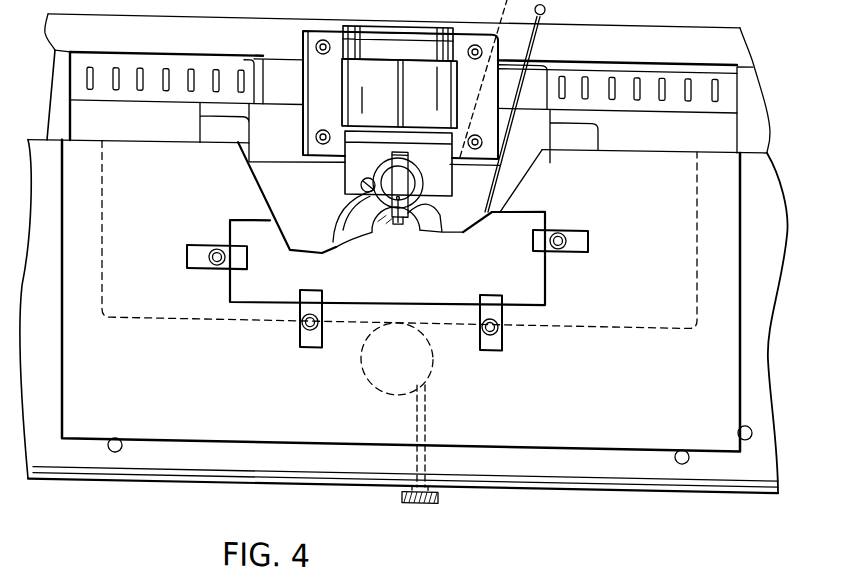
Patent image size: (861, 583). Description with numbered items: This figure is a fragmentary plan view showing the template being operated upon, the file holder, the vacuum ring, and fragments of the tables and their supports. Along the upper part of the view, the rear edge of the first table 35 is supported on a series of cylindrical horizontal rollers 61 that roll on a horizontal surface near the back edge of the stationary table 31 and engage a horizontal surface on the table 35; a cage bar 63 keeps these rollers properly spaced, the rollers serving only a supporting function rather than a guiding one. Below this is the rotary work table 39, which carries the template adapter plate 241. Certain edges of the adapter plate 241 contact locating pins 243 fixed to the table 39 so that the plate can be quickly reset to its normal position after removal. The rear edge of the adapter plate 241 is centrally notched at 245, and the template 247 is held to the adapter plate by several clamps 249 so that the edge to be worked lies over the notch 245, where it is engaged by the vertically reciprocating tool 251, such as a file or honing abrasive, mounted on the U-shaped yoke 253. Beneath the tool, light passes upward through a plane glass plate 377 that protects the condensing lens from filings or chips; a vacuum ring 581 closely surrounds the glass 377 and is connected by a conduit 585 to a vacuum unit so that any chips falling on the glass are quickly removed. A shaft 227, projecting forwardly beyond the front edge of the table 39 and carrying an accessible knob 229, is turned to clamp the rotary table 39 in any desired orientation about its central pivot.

The stationary table 31 is at (717, 121).
The first table 35 is at (60, 81).
The rotary work table 39 is at (610, 471).
The cylindrical horizontal rollers 61 is at (167, 69).
The cage bar 63 is at (234, 60).
The shaft 227 is at (427, 414).
The knob 229 is at (435, 494).
The template adapter plate 241 is at (682, 360).
The locating pins 243 is at (122, 440).
The notch 245 is at (259, 185).
The template 247 is at (528, 208).
The clamps 249 is at (305, 286).
The vertically reciprocating tool 251 is at (428, 214).
The U-shaped yoke 253 is at (400, 155).
The plane glass plate 377 is at (383, 220).
The vacuum ring 581 is at (340, 201).
The conduit 585 is at (548, 1).